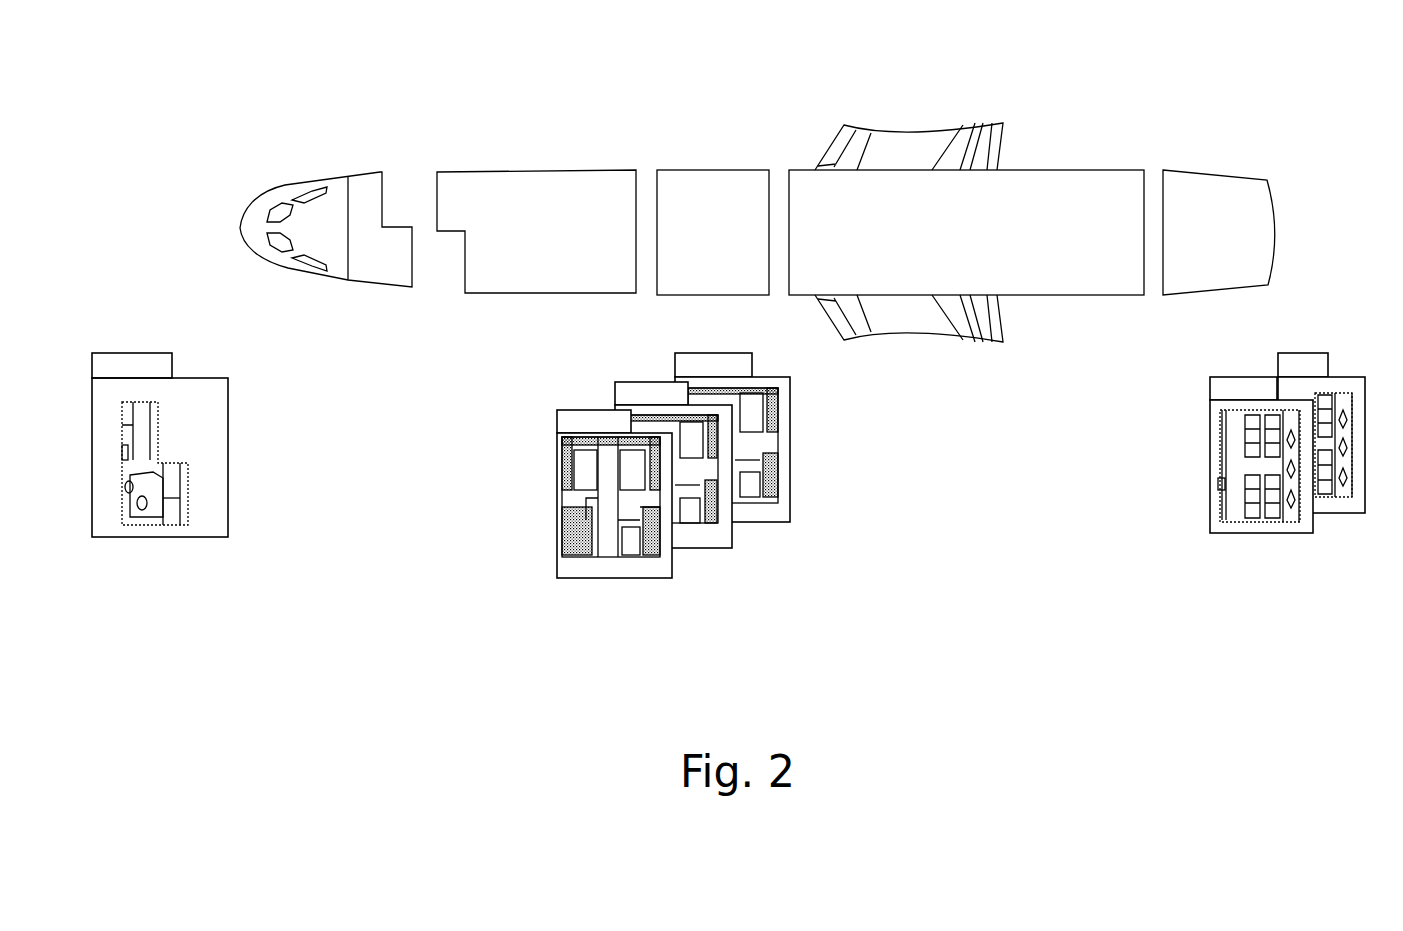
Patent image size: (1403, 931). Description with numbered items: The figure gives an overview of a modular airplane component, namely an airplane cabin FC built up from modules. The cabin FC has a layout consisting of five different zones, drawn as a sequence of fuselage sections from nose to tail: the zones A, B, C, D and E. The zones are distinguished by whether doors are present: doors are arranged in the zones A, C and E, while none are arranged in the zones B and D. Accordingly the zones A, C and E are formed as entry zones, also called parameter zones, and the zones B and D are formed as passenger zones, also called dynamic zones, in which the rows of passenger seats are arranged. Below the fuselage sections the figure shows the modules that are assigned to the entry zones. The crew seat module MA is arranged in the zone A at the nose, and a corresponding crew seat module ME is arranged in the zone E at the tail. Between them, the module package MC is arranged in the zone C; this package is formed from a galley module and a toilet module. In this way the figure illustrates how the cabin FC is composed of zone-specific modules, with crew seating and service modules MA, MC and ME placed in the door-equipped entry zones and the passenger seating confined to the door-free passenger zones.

The airplane cabin FC is at (757, 197).
The entry zone A is at (326, 229).
The passenger zone B is at (536, 231).
The entry zone C is at (713, 232).
The passenger zone D is at (966, 232).
The entry zone E is at (1219, 232).
The crew seat module MA is at (157, 537).
The module package MC is at (720, 548).
The crew seat module ME is at (1285, 533).